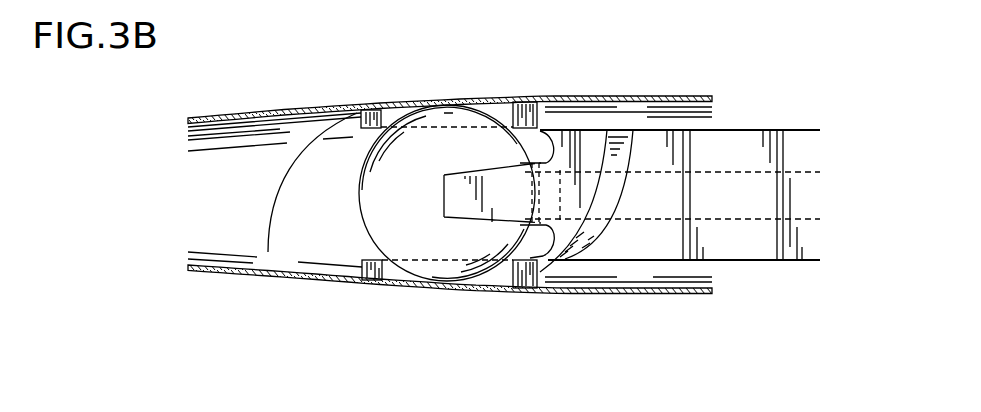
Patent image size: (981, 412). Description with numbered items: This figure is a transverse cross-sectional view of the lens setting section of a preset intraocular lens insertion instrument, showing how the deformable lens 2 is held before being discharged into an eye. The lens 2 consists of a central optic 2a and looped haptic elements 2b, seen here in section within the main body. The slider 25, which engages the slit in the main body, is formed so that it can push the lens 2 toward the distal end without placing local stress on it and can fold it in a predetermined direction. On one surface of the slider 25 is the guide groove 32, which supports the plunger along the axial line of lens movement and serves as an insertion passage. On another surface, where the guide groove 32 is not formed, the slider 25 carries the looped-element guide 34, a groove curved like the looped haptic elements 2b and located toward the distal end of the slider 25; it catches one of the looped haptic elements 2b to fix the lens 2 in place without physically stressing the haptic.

The lens 2 is at (386, 279).
The optic 2a is at (385, 223).
The looped haptic elements 2b is at (270, 198).
The slider 25 is at (487, 192).
The looped-element guide 34 is at (605, 195).
The guide groove 32 is at (755, 195).